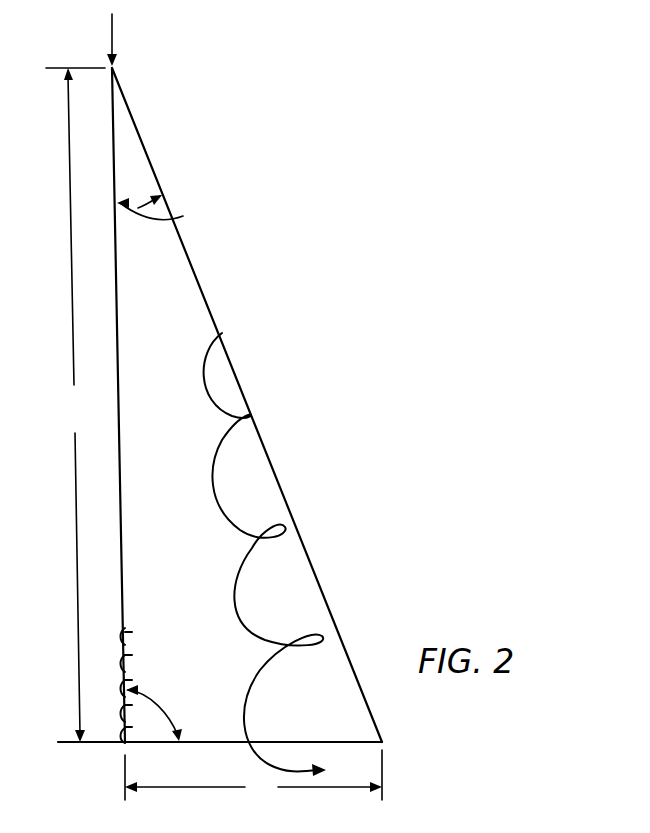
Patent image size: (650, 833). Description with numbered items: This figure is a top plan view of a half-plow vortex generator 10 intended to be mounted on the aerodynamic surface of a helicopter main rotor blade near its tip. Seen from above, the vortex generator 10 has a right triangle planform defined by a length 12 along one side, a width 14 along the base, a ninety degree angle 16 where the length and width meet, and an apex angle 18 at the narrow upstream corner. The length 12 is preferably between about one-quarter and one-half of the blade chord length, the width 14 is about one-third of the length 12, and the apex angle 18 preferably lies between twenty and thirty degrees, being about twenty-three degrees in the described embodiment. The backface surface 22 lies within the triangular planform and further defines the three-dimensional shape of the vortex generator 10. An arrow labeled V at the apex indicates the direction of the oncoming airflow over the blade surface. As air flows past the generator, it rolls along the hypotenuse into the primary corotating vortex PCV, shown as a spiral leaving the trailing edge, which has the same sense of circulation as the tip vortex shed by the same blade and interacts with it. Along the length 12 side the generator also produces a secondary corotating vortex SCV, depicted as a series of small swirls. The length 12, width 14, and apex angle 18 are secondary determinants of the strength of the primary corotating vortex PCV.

The half-plow vortex generator 10 is at (277, 325).
The length 12 is at (75, 405).
The width 14 is at (253, 776).
The ninety degree angle 16 is at (165, 704).
The apex angle 18 is at (164, 209).
The backface surface 22 is at (158, 594).
The vertex / inlet velocity V is at (109, 33).
The primary corotating vortex PCV is at (252, 632).
The secondary corotating vortex SCV is at (126, 745).